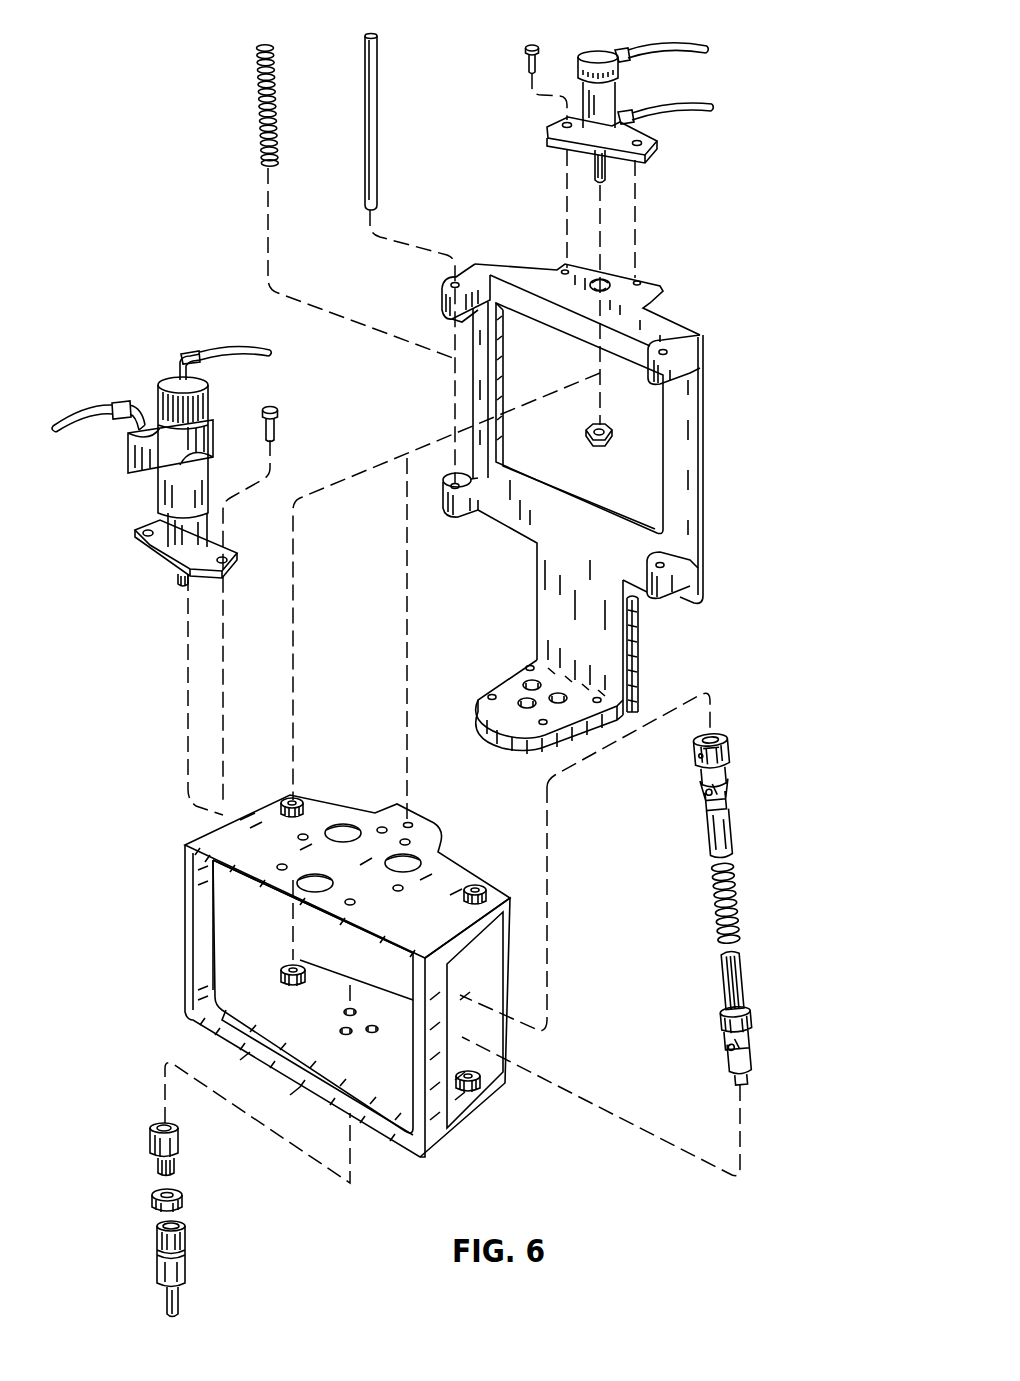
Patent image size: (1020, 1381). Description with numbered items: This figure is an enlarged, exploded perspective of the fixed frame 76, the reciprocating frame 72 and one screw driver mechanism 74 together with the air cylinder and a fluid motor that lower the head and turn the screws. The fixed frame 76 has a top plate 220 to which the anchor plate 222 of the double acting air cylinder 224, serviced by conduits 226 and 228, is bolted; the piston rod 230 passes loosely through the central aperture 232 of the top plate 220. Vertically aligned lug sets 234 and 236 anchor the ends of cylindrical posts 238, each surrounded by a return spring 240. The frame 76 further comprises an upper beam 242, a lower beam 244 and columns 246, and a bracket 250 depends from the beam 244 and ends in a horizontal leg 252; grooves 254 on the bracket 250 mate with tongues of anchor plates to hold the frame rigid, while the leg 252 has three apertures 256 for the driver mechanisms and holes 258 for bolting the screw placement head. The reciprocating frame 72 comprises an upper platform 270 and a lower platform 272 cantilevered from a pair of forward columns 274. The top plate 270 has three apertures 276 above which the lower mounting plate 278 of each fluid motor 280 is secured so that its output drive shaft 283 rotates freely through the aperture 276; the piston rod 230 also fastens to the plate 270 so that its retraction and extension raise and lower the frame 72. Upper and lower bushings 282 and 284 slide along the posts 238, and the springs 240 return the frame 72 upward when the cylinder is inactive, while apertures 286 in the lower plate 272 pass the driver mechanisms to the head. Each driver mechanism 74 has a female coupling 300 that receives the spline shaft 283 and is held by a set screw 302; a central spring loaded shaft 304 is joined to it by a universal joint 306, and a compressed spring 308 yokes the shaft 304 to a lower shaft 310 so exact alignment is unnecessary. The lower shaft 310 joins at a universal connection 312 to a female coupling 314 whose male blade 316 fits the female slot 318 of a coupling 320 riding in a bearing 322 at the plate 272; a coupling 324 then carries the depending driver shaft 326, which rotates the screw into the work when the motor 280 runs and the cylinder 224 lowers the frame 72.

The reciprocating frame 72 is at (344, 950).
The screw driver mechanism 74 is at (455, 1025).
The fixed frame 76 is at (590, 521).
The top plate 220 is at (590, 521).
The anchor plate 222 is at (666, 153).
The double acting air cylinder 224 is at (636, 85).
The conduit 226 is at (716, 54).
The conduit 228 is at (730, 116).
The piston rod 230 is at (612, 172).
The central aperture 232 is at (640, 250).
The upper lug set 234 is at (444, 292).
The lower lug set 236 is at (455, 512).
The cylindrical post 238 is at (376, 116).
The return spring 240 is at (278, 118).
The upper beam 242 is at (550, 328).
The lower beam 244 is at (610, 544).
The column 246 is at (506, 397).
The bracket 250 is at (603, 631).
The horizontal leg 252 is at (516, 695).
The groove 254 is at (640, 655).
The aperture 256 is at (558, 693).
The hole 258 is at (488, 697).
The upper platform 270 is at (430, 928).
The lower platform 272 is at (400, 1099).
The forward column 274 is at (200, 952).
The aperture 276 is at (315, 874).
The lower mounting plate 278 is at (220, 570).
The fluid motor 280 is at (267, 586).
The upper bushing 282 is at (300, 798).
The output drive shaft 283 is at (178, 580).
The lower bushing 284 is at (302, 984).
The aperture 286 is at (368, 1034).
The female coupling 300 is at (730, 757).
The set screw 302 is at (694, 760).
The central spring loaded shaft 304 is at (715, 840).
The universal joint 306 is at (727, 790).
The compressed spring 308 is at (716, 912).
The lower shaft 310 is at (724, 980).
The universal connection 312 is at (752, 1025).
The female coupling 314 is at (752, 1060).
The male blade 316 is at (746, 1086).
The female slot 318 is at (178, 1148).
The coupling 320 is at (180, 1160).
The bearing 322 is at (184, 1203).
The coupling 324 is at (186, 1262).
The driver shaft 326 is at (180, 1298).